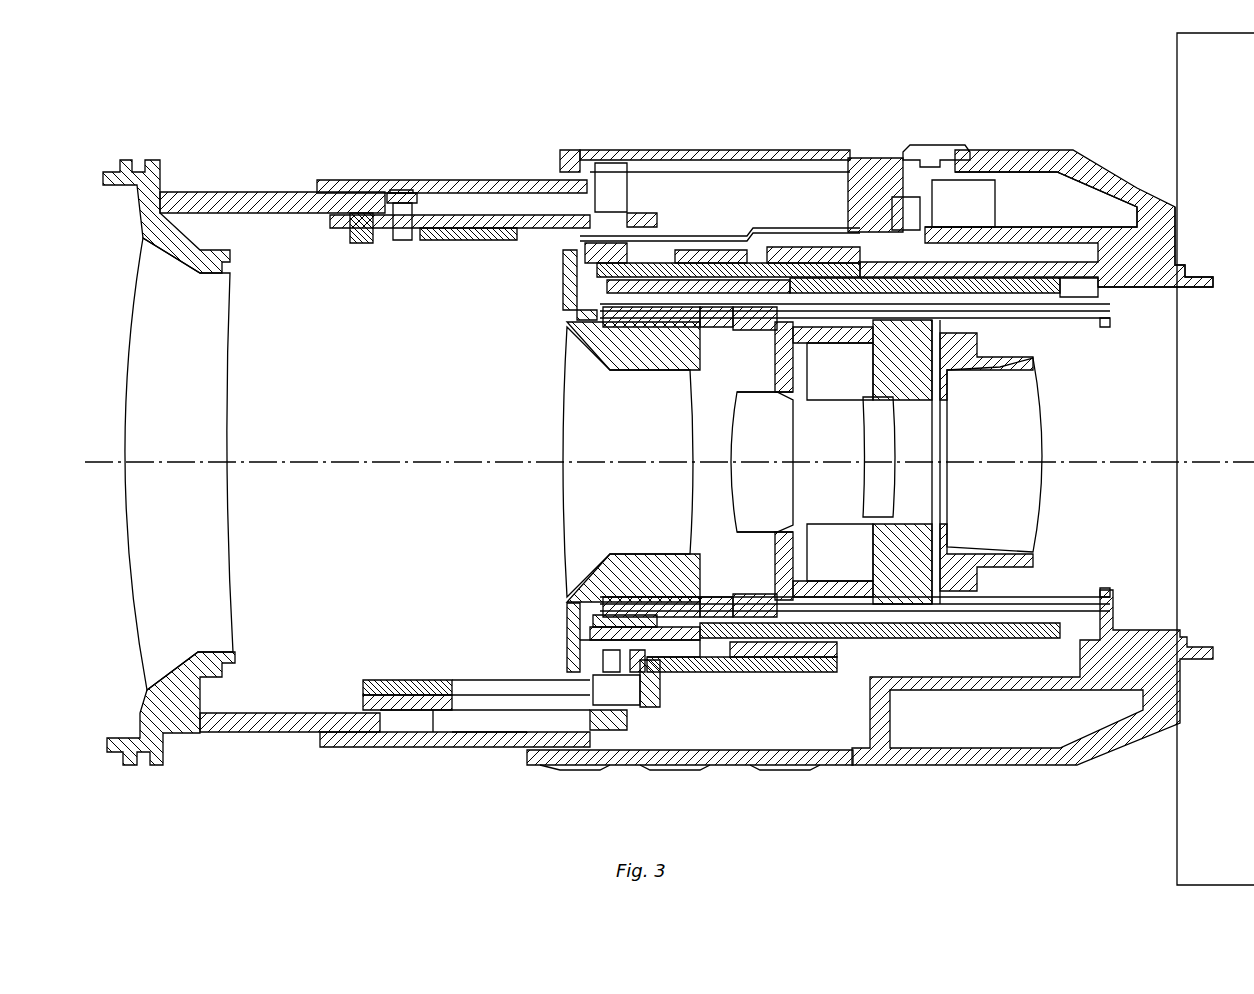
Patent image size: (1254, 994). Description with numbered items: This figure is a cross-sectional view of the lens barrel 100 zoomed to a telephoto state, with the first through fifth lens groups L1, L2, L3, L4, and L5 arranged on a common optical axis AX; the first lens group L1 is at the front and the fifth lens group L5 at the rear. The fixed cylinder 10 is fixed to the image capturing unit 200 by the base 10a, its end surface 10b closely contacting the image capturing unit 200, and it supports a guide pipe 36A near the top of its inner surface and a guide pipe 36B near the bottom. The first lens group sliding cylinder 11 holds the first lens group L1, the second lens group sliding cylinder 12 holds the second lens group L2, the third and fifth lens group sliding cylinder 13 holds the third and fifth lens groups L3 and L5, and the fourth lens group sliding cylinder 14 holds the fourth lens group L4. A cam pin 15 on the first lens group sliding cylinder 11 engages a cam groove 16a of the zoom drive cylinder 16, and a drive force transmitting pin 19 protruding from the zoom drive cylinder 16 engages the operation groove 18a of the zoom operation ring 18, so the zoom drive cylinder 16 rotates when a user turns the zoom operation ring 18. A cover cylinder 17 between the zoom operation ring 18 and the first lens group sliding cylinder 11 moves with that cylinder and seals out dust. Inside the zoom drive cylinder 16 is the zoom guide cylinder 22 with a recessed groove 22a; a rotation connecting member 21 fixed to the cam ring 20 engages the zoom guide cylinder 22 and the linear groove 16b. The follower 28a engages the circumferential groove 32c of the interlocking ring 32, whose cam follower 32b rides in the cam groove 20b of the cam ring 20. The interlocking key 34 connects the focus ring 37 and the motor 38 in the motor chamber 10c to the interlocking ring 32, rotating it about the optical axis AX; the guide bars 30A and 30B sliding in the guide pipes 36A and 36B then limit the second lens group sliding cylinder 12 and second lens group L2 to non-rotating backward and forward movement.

The lens barrel 100 is at (183, 118).
The image capturing unit 200 is at (1172, 83).
The fixed cylinder 10 is at (1056, 150).
The base 10a is at (1203, 267).
The end surface 10b is at (1178, 183).
The motor chamber 10c is at (1127, 220).
The first lens group sliding cylinder 11 is at (133, 213).
The second lens group sliding cylinder 12 is at (563, 597).
The third and fifth lens group sliding cylinder 13 is at (770, 545).
The fourth lens group sliding cylinder 14 is at (880, 553).
The cam pin 15 is at (410, 195).
The zoom drive cylinder 16 is at (350, 226).
The cam groove 16a is at (383, 193).
The linear groove 16b is at (630, 745).
The cover cylinder 17 is at (490, 180).
The zoom operation ring 18 is at (813, 148).
The operation groove 18a is at (575, 160).
The drive force transmitting pin 19 is at (622, 163).
The cam ring 20 is at (1010, 295).
The cam groove 20b is at (700, 330).
The rotation connecting member 21 is at (600, 705).
The zoom guide cylinder 22 is at (370, 680).
The recessed groove 22a is at (612, 740).
The follower 28a is at (657, 303).
The guide bar 30A is at (840, 343).
The guide bar 30B is at (1045, 593).
The interlocking ring 32 is at (565, 270).
The cam follower 32b is at (737, 330).
The circumferential groove 32c is at (660, 370).
The interlocking key 34 is at (848, 228).
The guide pipe 36A is at (1080, 322).
The guide pipe 36B is at (1085, 587).
The focus ring 37 is at (950, 147).
The motor 38 is at (997, 207).
The first lens group L1 is at (229, 396).
The second lens group L2 is at (563, 435).
The third lens group L3 is at (795, 480).
The fourth lens group L4 is at (860, 428).
The fifth lens group L5 is at (1040, 515).
The optical axis AX is at (1220, 457).